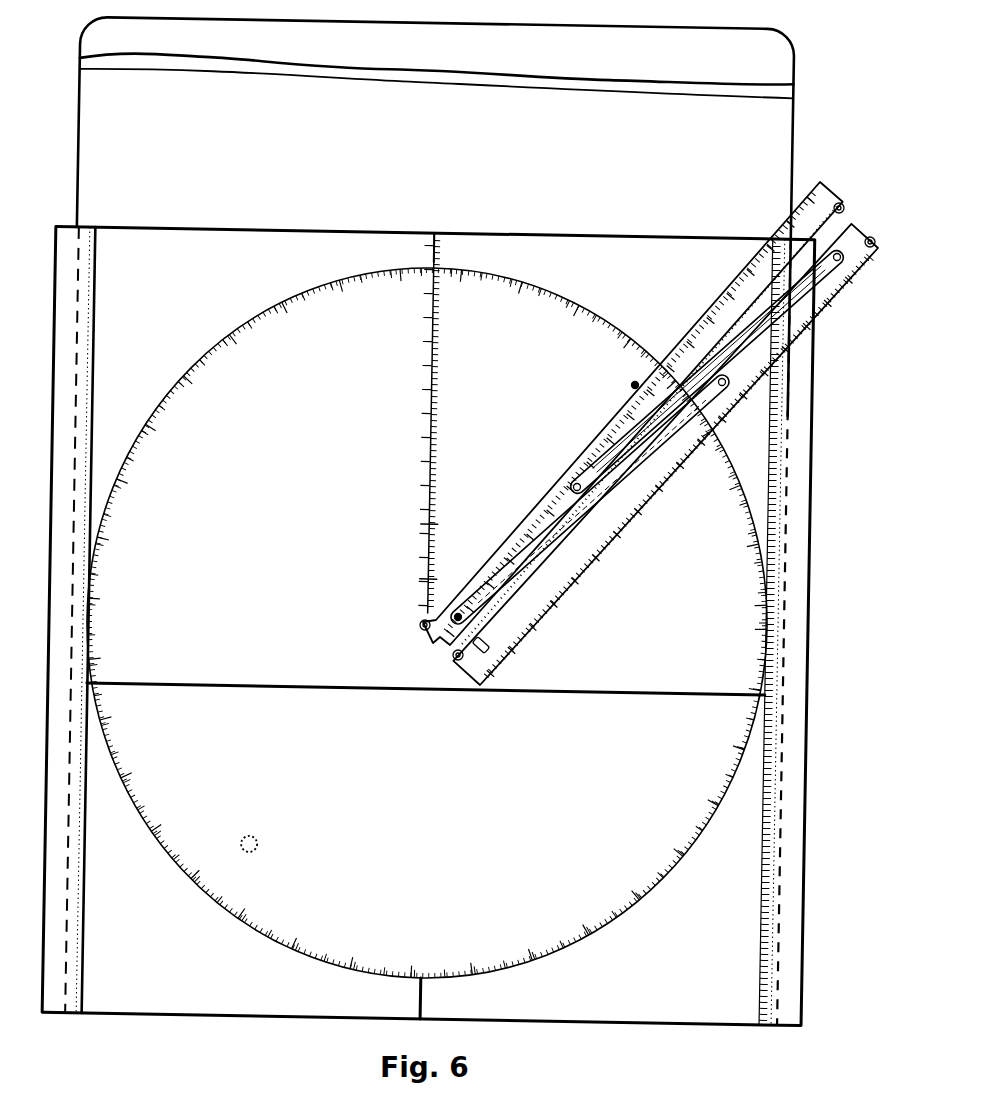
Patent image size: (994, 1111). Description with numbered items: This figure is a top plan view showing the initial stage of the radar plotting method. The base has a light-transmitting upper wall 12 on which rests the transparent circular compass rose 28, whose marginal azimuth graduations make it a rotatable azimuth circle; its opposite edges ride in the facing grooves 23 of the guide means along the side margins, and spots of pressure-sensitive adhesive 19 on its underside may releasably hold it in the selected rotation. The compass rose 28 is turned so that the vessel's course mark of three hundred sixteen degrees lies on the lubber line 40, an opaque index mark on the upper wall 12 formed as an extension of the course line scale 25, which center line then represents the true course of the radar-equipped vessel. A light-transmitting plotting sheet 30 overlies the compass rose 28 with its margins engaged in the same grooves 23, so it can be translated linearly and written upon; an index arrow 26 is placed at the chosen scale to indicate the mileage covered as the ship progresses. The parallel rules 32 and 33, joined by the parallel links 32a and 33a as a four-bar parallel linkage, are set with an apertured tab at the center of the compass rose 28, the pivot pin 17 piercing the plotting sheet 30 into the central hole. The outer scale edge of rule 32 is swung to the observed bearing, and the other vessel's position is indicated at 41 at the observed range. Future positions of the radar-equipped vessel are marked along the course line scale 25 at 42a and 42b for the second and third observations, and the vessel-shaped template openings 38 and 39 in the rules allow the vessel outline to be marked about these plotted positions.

The upper wall 12 is at (686, 1008).
The pivot pin 17 is at (425, 630).
The spots of pressure-sensitive adhesive 19 is at (262, 843).
The groove 23 is at (80, 223).
The course line scale 25 is at (440, 437).
The index arrow 26 is at (94, 618).
The compass rose 28 is at (255, 310).
The plotting sheet 30 is at (760, 115).
The rule 32 is at (822, 220).
The parallel link 32a is at (547, 550).
The rule 33 is at (472, 663).
The parallel link 33a is at (752, 320).
The thru opening 38 is at (838, 205).
The thru opening 39 is at (483, 645).
The lubber line 40 is at (440, 247).
The position of the observed vessel 41 is at (635, 385).
The plotted position 42a is at (426, 579).
The plotted position 42b is at (426, 524).